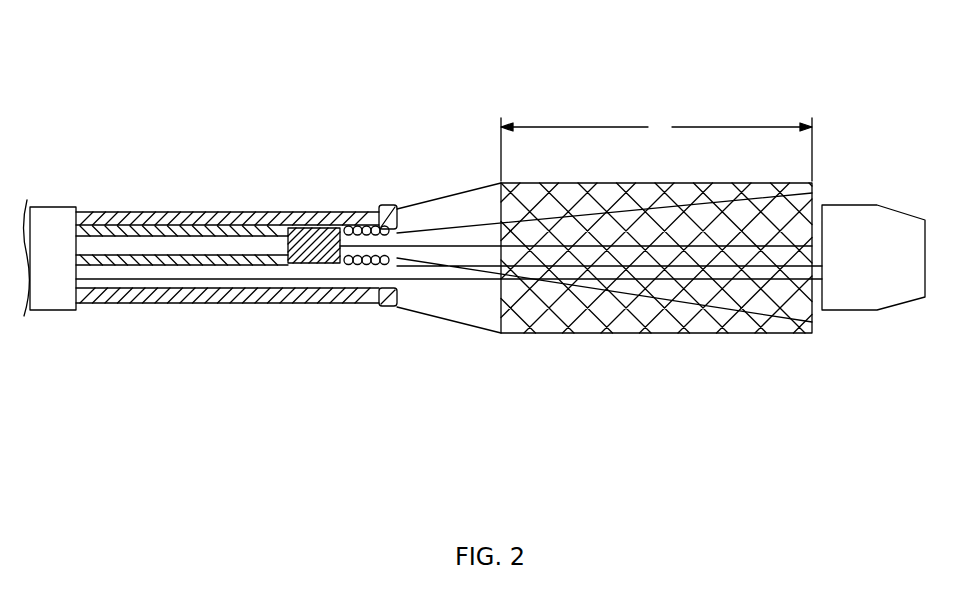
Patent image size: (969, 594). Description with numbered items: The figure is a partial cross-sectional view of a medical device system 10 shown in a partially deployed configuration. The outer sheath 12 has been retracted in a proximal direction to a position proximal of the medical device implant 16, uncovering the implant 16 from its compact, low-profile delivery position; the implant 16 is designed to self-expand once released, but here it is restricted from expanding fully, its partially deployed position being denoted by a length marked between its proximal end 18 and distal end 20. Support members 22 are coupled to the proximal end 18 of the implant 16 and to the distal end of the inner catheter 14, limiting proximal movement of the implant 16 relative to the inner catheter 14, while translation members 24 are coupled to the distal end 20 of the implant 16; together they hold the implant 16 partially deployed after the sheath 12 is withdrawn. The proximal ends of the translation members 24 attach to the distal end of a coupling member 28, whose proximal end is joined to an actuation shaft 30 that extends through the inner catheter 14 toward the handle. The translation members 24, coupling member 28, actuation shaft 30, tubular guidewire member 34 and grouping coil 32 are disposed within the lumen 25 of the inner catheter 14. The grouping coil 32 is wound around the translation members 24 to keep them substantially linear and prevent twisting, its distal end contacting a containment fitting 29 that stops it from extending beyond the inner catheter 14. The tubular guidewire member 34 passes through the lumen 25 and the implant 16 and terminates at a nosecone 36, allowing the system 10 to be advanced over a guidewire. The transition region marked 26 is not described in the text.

The medical device system 10 is at (706, 58).
The outer sheath 12 is at (53, 206).
The inner catheter 14 is at (155, 220).
The medical device implant 16 is at (657, 183).
The proximal end of the implant 18 is at (496, 170).
The distal end of the implant 20 is at (814, 170).
The support members 22 is at (450, 197).
The translation members 24 is at (427, 231).
The lumen 25 is at (401, 288).
The transition junction 26 is at (363, 170).
The coupling member 28 is at (307, 248).
The containment fitting 29 is at (390, 308).
The actuation shaft 30 is at (180, 248).
The grouping coil 32 is at (357, 230).
The tubular guidewire member 34 is at (113, 272).
The nosecone 36 is at (887, 218).